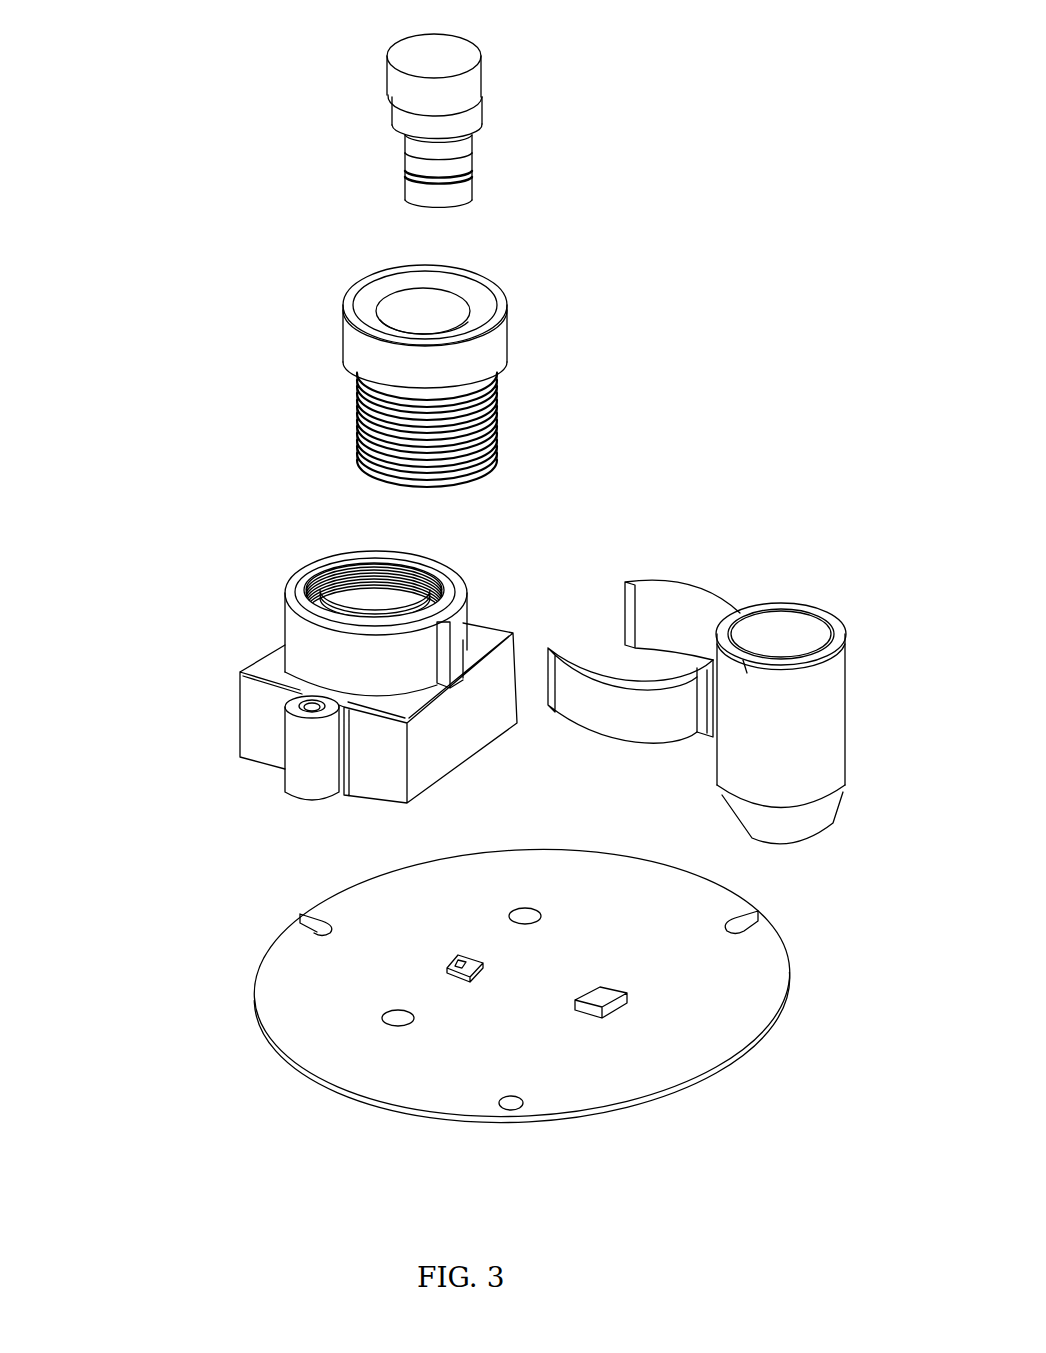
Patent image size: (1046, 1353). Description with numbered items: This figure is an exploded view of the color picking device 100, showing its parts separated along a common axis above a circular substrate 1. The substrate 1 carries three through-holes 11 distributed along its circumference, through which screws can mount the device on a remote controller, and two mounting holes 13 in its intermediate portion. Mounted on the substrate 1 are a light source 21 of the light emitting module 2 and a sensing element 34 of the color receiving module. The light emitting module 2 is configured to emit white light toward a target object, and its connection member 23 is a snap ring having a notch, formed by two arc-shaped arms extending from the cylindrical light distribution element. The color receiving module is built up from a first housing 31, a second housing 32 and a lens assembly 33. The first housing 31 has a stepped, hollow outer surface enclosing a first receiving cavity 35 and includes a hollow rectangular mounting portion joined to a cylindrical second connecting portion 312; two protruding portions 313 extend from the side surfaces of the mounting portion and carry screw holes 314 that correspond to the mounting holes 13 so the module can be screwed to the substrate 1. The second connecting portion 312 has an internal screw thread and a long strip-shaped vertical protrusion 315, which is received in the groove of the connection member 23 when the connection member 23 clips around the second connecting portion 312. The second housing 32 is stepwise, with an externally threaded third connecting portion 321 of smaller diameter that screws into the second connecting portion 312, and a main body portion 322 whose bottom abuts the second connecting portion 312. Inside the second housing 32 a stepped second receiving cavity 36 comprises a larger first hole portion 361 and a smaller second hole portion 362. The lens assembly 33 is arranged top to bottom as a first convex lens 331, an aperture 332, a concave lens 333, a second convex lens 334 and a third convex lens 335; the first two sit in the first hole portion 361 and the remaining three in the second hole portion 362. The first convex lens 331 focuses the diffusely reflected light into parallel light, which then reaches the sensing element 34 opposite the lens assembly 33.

The color picking device 100 is at (133, 16).
The substrate 1 is at (570, 1068).
The through-hole 11 is at (500, 1107).
The mounting hole 13 is at (512, 912).
The light emitting module 2 is at (781, 742).
The light source 21 is at (600, 1000).
The connection member 23 is at (680, 610).
The first housing 31 is at (378, 713).
The second connecting portion 312 is at (330, 663).
The protruding portion 313 is at (312, 770).
The screw hole 314 is at (312, 704).
The protrusion 315 is at (462, 632).
The second housing 32 is at (193, 290).
The third connecting portion 321 is at (357, 413).
The main body portion 322 is at (415, 377).
The lens assembly 33 is at (605, 53).
The first convex lens 331 is at (454, 96).
The aperture 332 is at (452, 127).
The concave lens 333 is at (458, 150).
The second convex lens 334 is at (458, 160).
The third convex lens 335 is at (458, 195).
The sensing element 34 is at (450, 966).
The first receiving cavity 35 is at (330, 583).
The second receiving cavity 36 is at (667, 255).
The first hole portion 361 is at (415, 318).
The second hole portion 362 is at (430, 333).